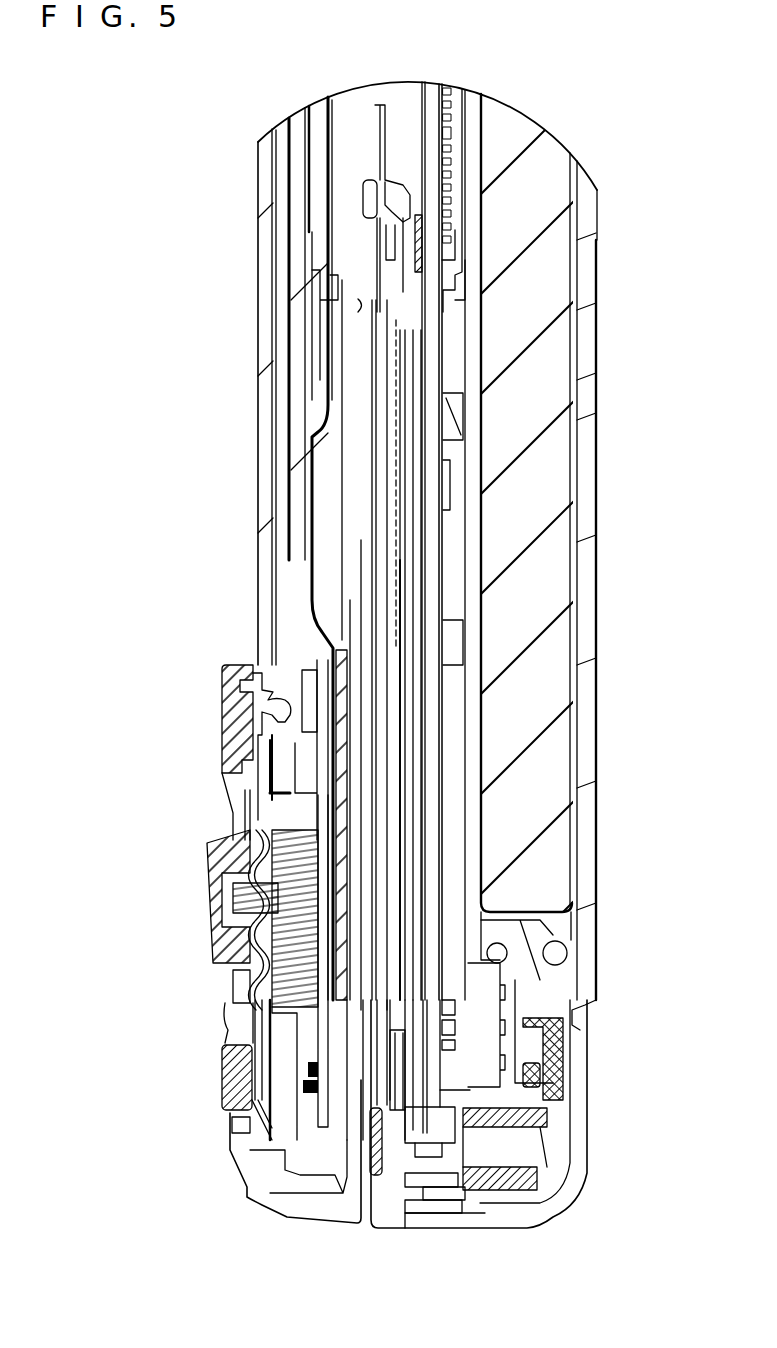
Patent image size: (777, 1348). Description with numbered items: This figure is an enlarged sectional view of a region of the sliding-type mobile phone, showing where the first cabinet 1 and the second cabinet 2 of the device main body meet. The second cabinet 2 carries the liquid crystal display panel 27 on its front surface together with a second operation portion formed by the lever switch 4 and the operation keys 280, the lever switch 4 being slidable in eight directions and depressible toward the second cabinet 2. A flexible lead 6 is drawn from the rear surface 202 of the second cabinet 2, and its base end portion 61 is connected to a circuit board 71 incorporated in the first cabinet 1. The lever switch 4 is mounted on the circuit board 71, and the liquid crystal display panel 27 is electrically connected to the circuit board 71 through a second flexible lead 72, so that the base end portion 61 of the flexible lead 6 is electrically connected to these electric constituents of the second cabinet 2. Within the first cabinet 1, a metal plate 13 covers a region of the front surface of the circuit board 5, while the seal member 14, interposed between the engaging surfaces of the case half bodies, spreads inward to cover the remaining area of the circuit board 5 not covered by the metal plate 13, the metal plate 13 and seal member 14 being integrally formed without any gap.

The first cabinet 1 is at (545, 1223).
The second cabinet 2 is at (318, 1218).
The lever switch 4 is at (240, 905).
The circuit board 5 is at (435, 350).
The flexible lead 6 is at (329, 142).
The metal plate 13 is at (393, 117).
The seal member 14 is at (410, 312).
The liquid crystal display panel 27 is at (268, 446).
The base end portion 61 is at (302, 603).
The circuit board 71 is at (290, 770).
The second flexible lead 72 is at (313, 637).
The rear surface 202 is at (356, 306).
The operation key 280 is at (222, 1080).